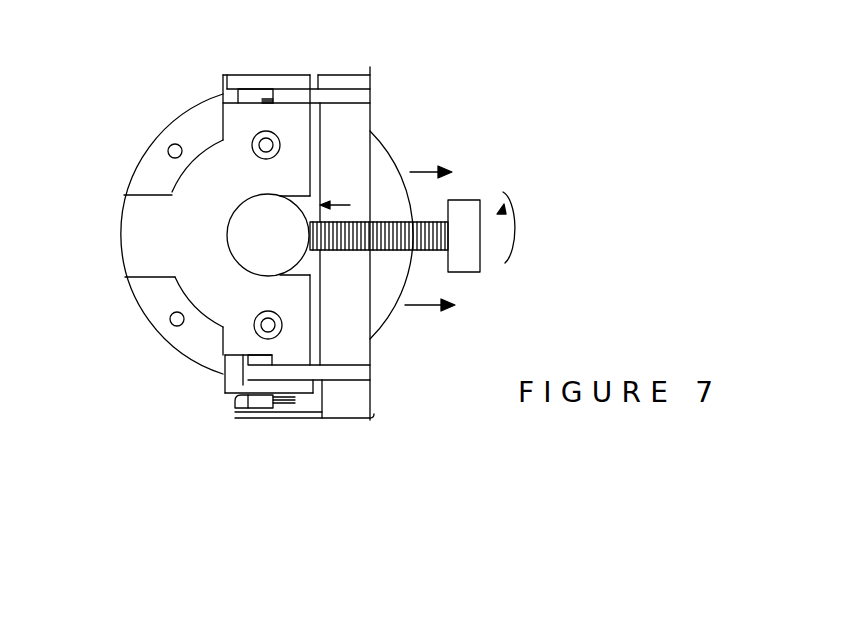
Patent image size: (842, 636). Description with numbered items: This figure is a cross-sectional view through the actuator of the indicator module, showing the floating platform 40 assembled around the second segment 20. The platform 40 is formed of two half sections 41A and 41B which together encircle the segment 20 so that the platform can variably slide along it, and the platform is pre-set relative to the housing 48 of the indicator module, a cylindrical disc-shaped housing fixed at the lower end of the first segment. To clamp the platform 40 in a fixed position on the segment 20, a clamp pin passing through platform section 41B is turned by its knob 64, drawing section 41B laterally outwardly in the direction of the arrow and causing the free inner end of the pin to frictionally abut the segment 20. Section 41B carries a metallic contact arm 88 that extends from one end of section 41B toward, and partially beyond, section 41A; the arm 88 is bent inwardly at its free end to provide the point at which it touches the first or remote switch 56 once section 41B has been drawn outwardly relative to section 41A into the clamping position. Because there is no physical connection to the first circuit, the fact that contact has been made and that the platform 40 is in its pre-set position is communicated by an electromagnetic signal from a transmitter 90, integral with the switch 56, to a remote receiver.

The floating platform 40 is at (383, 95).
The platform half section 41A is at (138, 250).
The platform half section 41B is at (347, 337).
The second segment 20 is at (268, 235).
The housing 48 is at (378, 182).
The knob 64 is at (467, 210).
The first or remote switch 56 is at (248, 405).
The transmitter 90 is at (281, 405).
The metallic contact arm 88 is at (308, 420).